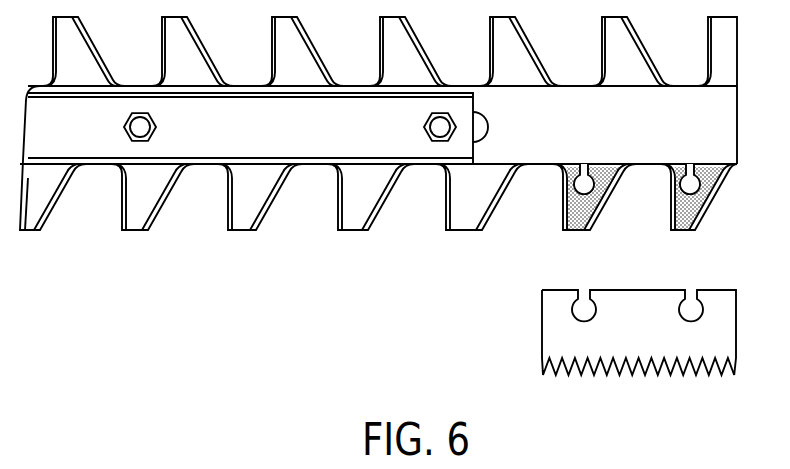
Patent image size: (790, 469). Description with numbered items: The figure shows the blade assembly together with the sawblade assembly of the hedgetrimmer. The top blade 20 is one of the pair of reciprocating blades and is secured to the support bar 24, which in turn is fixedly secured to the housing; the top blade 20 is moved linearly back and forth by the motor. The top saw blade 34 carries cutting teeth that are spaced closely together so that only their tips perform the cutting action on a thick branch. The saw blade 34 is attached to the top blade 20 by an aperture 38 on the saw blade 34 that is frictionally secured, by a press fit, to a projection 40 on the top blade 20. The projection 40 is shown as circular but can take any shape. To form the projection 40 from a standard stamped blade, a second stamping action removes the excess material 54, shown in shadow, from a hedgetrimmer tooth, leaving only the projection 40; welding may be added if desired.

The top blade 20 is at (389, 140).
The support bar 24 is at (337, 137).
The top saw blade 34 is at (720, 343).
The aperture 38 is at (691, 307).
The projection 40 is at (694, 184).
The excess material 54 is at (578, 216).